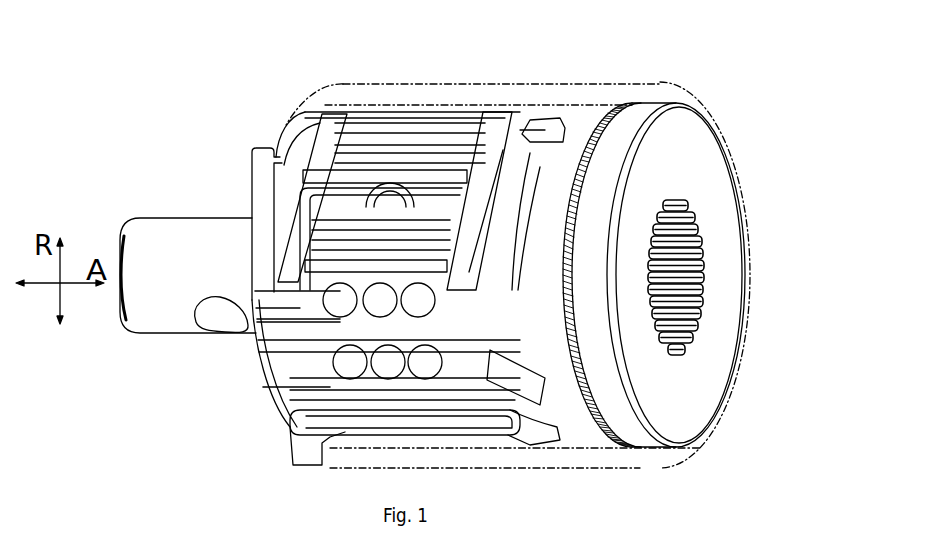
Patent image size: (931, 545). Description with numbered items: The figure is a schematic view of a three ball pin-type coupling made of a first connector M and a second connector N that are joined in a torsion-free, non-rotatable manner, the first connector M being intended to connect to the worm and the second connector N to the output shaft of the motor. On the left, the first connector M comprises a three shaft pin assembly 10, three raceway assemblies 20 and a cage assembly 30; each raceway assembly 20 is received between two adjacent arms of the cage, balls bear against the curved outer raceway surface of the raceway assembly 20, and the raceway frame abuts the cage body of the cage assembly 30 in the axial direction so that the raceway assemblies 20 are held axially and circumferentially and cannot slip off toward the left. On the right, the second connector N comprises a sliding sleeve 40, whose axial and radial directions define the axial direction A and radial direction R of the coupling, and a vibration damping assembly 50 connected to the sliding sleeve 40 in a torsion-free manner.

The three shaft pin assembly 10 is at (205, 218).
The raceway assembly 20 is at (487, 135).
The cage assembly 30 is at (272, 336).
The sliding sleeve 40 is at (599, 95).
The vibration damping assembly 50 is at (737, 233).
The first connector M is at (298, 142).
The second connector N is at (675, 100).